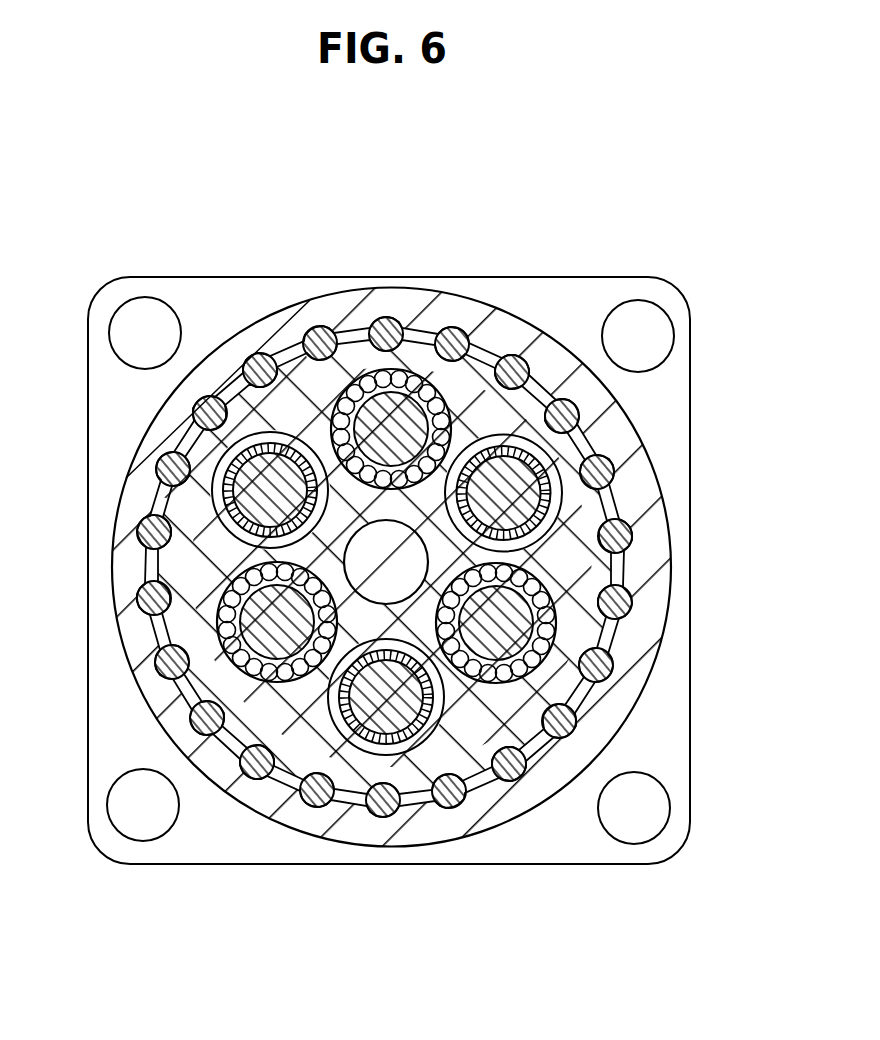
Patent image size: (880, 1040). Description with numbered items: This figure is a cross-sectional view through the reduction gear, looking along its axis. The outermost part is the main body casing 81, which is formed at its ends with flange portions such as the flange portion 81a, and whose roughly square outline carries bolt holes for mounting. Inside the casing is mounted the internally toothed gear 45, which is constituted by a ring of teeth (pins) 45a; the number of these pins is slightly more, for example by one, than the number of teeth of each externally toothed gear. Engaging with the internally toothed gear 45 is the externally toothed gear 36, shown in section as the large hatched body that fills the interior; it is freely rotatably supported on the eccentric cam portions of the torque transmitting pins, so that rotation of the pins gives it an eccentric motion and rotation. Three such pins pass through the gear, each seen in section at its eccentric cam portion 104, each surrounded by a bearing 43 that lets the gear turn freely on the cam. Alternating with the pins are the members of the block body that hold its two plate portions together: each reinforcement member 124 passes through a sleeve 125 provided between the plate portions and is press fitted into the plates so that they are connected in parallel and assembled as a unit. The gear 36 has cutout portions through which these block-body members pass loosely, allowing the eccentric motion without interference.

The main body casing 81 is at (694, 445).
The flange portion 81a is at (690, 332).
The internally toothed gear 45 is at (462, 318).
The teeth (pins) 45a is at (387, 338).
The externally toothed gear 36 is at (577, 572).
The ball bearing 43 is at (226, 623).
The eccentric cam portion 104 is at (248, 676).
The reinforcement member 124 is at (243, 473).
The sleeve 125 is at (238, 460).